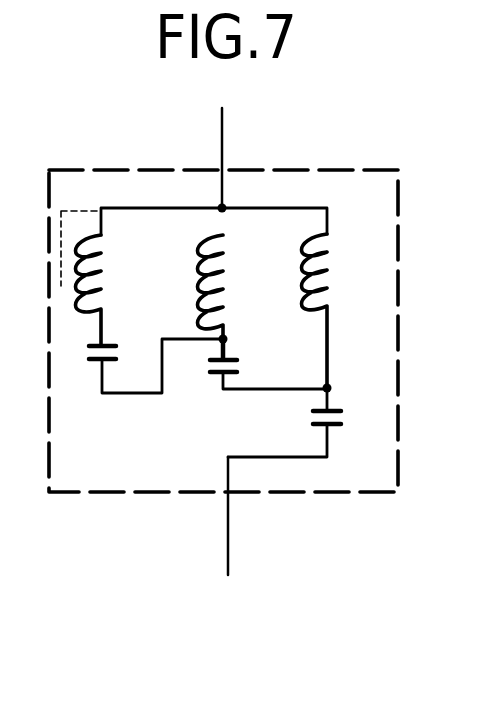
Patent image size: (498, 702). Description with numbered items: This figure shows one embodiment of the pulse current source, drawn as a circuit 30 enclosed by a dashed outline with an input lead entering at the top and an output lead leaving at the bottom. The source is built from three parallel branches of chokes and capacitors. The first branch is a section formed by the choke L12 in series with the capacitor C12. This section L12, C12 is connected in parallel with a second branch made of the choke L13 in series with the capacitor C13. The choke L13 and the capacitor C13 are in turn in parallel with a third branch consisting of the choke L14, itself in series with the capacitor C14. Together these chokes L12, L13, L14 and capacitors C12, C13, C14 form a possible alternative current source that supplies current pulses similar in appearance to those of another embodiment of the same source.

The filter circuit 30 is at (340, 167).
The choke L12 is at (114, 267).
The choke L13 is at (229, 267).
The choke L14 is at (333, 262).
The capacitor C12 is at (118, 344).
The capacitor C13 is at (239, 361).
The capacitor C14 is at (316, 407).